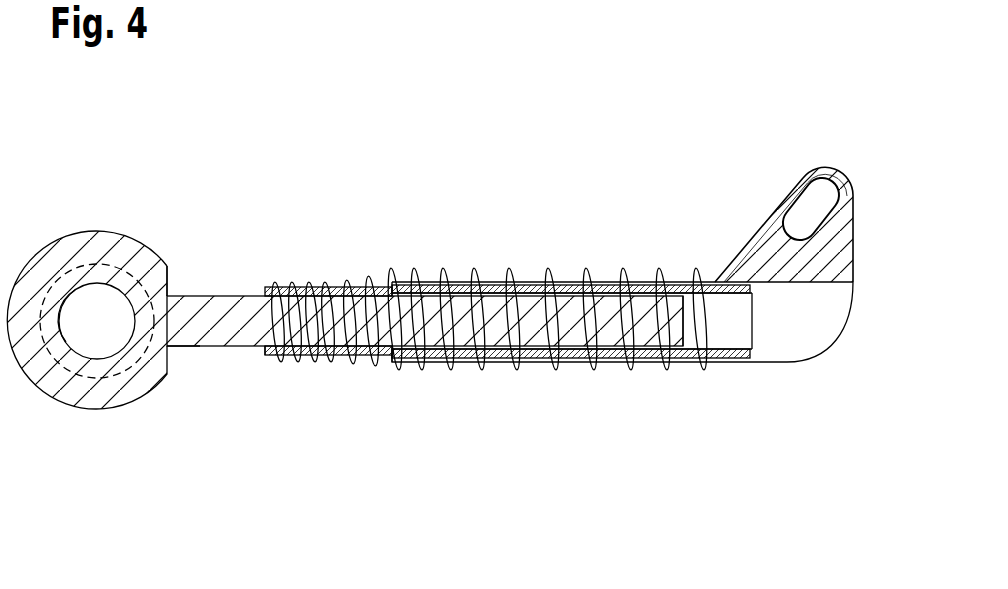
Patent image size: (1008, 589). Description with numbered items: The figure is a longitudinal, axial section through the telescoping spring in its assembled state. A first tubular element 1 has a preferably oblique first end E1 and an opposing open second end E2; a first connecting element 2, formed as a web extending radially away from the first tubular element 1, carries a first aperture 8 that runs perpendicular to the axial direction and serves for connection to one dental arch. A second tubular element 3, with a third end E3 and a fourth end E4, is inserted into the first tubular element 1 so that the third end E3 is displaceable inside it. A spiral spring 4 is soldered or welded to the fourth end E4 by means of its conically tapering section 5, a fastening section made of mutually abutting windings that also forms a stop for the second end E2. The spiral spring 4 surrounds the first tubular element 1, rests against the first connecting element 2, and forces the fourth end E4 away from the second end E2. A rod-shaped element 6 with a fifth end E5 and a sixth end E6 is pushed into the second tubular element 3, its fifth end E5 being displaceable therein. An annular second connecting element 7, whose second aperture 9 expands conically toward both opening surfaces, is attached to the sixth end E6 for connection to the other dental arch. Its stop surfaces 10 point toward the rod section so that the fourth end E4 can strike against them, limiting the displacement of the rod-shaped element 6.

The first tubular element 1 is at (752, 325).
The first connecting element 2 is at (765, 242).
The second tubular element 3 is at (615, 352).
The spiral spring 4 is at (417, 276).
The conically tapering section 5 is at (314, 260).
The rod-shaped element 6 is at (568, 317).
The second connecting element 7 is at (103, 243).
The first aperture 8 is at (832, 199).
The second aperture 9 is at (72, 348).
The stop surfaces 10 is at (168, 358).
The first end E1 is at (827, 332).
The second end E2 is at (378, 357).
The third end E3 is at (765, 325).
The fourth end E4 is at (262, 355).
The fifth end E5 is at (692, 323).
The sixth end E6 is at (184, 268).